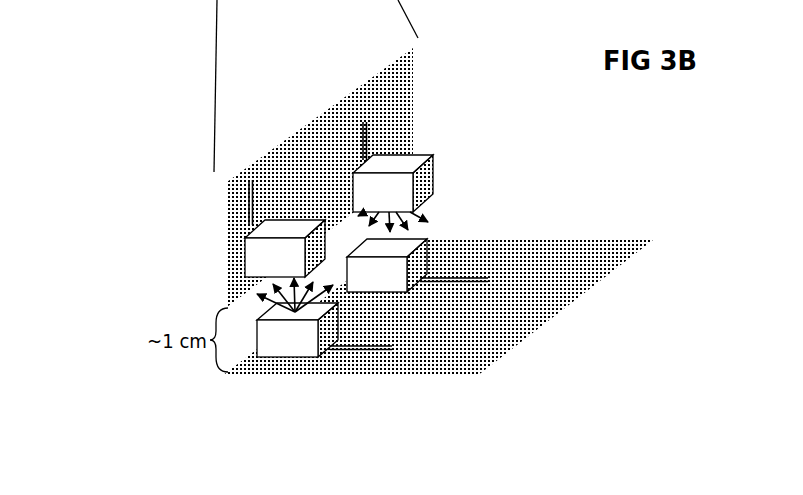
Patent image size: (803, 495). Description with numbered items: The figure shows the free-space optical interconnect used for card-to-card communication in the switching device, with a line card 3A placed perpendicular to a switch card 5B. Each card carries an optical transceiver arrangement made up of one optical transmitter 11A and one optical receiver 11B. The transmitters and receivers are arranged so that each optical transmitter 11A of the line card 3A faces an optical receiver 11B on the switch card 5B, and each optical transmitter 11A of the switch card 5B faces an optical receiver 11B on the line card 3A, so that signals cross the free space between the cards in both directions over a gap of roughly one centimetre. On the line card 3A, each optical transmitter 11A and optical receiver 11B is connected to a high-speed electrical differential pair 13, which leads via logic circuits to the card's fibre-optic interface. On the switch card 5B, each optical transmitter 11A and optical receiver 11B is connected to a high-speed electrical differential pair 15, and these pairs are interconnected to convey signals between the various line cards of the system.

The line card 3A is at (355, 92).
The switch card 5B is at (570, 240).
The optical transmitter 11A is at (433, 163).
The optical receiver 11B is at (290, 212).
The electrical differential pair 13 is at (367, 128).
The electrical differential pair 15 is at (463, 283).